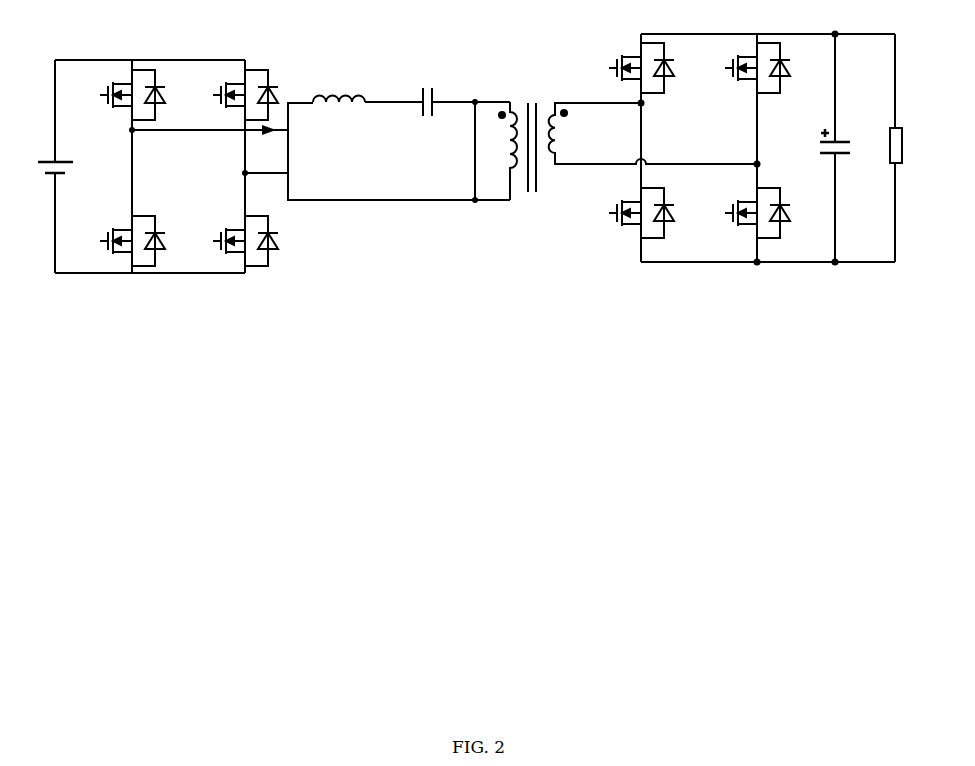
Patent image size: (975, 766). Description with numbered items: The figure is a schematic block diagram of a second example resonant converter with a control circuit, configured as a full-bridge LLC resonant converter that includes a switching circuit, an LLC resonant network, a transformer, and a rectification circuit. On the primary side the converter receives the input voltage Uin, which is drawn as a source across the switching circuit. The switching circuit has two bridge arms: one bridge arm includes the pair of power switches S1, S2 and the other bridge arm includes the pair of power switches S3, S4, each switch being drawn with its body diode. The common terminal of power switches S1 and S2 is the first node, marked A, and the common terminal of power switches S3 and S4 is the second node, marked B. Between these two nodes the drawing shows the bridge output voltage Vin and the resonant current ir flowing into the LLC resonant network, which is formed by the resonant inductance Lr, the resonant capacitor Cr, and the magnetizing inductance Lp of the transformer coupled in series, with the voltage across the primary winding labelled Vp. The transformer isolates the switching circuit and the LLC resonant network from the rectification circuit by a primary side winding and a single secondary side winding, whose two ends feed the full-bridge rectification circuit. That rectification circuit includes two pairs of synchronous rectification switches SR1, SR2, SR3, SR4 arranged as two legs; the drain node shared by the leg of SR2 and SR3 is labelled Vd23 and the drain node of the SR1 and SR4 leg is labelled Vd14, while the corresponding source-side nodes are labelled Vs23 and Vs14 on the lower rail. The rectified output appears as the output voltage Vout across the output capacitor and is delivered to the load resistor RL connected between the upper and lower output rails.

The input voltage Uin is at (44, 168).
The power switch S1 is at (121, 95).
The power switch S2 is at (121, 241).
The power switch S3 is at (235, 95).
The power switch S4 is at (235, 241).
The bridge midpoint node A is at (119, 131).
The bridge midpoint node B is at (234, 172).
The resonant current ir is at (267, 140).
The bridge input voltage Vin is at (292, 151).
The resonant inductance Lr is at (339, 84).
The resonant capacitor Cr is at (426, 91).
The primary winding voltage Vp is at (462, 151).
The magnetizing inductance Lp is at (501, 151).
The synchronous rectification switch SR1 is at (659, 71).
The synchronous rectification switch SR2 is at (777, 71).
The synchronous rectification switch SR3 is at (659, 213).
The synchronous rectification switch SR4 is at (777, 213).
The drain voltage node of SR2/SR3 Vd23 is at (659, 113).
The drain voltage node of SR1/SR4 Vd14 is at (777, 166).
The source voltage node of SR2/SR3 Vs23 is at (645, 271).
The source voltage node of SR1/SR4 Vs14 is at (755, 273).
The output voltage with output capacitor Vout is at (850, 137).
The load resistor RL is at (910, 146).